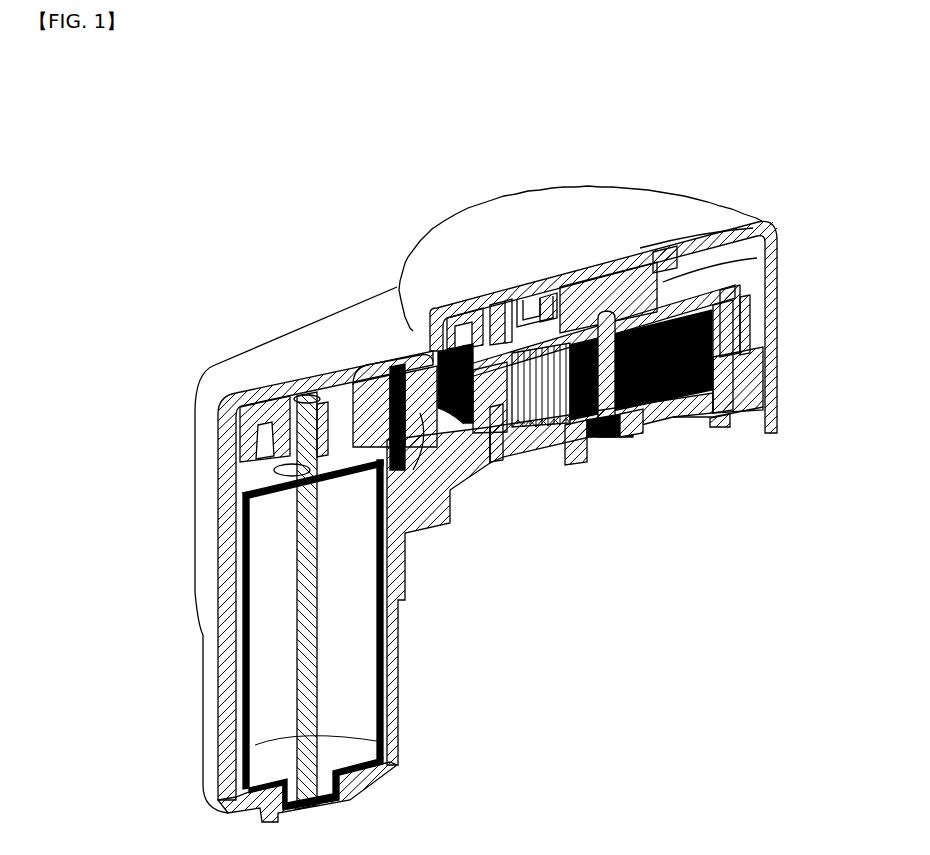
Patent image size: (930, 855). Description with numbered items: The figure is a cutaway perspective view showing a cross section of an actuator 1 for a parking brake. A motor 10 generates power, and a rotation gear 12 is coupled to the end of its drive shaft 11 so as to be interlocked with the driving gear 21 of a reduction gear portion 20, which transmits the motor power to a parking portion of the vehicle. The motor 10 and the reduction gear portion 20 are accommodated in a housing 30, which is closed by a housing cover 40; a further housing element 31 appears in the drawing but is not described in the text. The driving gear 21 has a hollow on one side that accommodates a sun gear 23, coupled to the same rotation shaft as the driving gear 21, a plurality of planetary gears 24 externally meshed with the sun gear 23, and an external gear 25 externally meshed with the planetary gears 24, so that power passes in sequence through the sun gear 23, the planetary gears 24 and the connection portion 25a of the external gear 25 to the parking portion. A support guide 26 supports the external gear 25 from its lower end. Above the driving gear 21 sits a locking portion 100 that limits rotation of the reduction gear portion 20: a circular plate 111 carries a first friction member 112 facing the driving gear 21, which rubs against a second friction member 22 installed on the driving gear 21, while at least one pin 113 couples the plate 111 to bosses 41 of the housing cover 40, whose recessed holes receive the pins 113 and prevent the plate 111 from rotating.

The actuator 1 is at (333, 149).
The motor 10 is at (240, 748).
The drive shaft 11 is at (302, 399).
The rotation gear 12 is at (273, 389).
The reduction gear portion 20 is at (653, 430).
The driving gear 21 is at (737, 297).
The second friction member 22 is at (745, 271).
The sun gear 23 is at (567, 428).
The planetary gears 24 is at (532, 421).
The external gear 25 is at (637, 438).
The connection portion 25a is at (598, 428).
The support guide 26 is at (735, 330).
The housing 30 is at (415, 524).
The curved surface 31 is at (418, 470).
The housing cover 40 is at (200, 398).
The bosses 41 is at (482, 309).
The locking portion 100 is at (685, 270).
The plate 111 is at (527, 310).
The first friction member 112 is at (752, 255).
The pin 113 is at (492, 302).